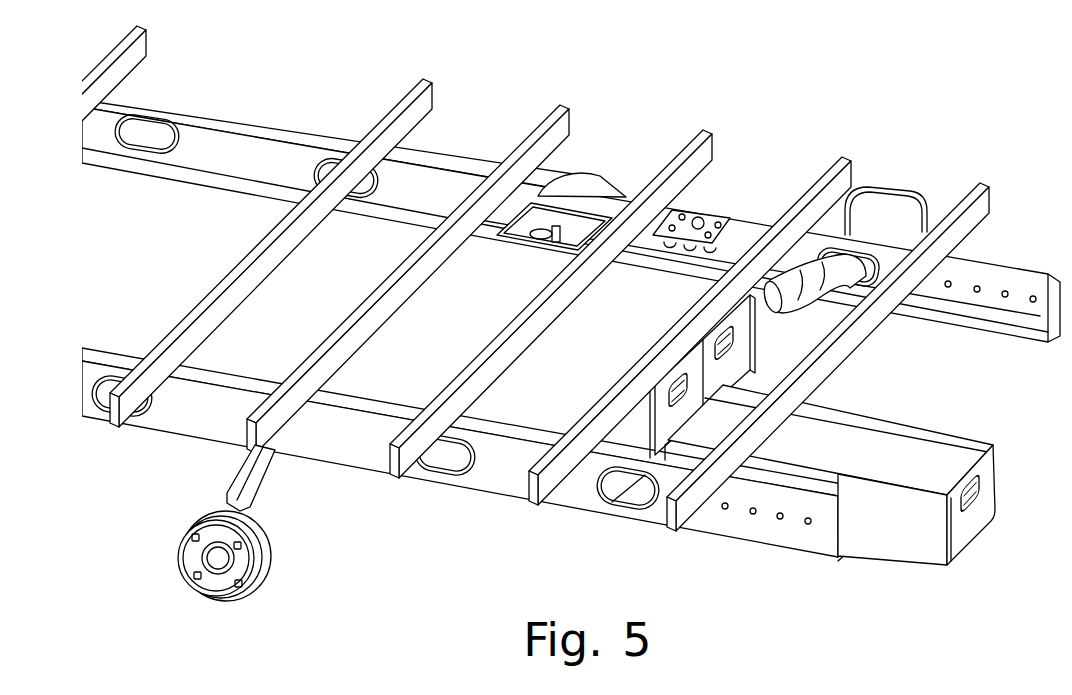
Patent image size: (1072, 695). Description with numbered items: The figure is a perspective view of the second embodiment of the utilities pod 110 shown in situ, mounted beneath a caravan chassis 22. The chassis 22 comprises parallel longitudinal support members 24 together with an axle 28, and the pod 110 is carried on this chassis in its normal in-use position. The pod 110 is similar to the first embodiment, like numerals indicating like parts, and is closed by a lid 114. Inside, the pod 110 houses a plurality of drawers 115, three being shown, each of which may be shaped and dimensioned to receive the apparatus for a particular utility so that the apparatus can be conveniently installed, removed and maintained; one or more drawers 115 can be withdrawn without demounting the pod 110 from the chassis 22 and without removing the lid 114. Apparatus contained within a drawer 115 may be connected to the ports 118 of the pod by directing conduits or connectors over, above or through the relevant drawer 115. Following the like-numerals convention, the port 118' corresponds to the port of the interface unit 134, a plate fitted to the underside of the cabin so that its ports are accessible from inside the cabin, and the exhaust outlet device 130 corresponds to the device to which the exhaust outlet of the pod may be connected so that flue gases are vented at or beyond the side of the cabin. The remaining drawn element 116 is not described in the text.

The chassis 22 is at (1003, 264).
The longitudinal support members 24 is at (450, 165).
The axle 28 is at (267, 488).
The pod 110 is at (509, 402).
The lid 114 is at (546, 382).
The drawers 115 is at (925, 442).
The track 116 is at (703, 265).
The ports 118 is at (580, 136).
The port of interface unit 118' is at (747, 126).
The exhaust outlet device 130 is at (889, 190).
The interface unit 134 is at (720, 220).